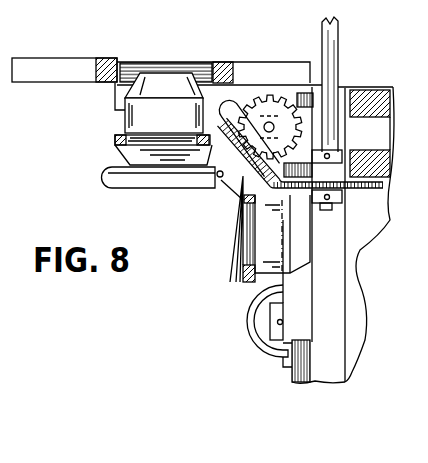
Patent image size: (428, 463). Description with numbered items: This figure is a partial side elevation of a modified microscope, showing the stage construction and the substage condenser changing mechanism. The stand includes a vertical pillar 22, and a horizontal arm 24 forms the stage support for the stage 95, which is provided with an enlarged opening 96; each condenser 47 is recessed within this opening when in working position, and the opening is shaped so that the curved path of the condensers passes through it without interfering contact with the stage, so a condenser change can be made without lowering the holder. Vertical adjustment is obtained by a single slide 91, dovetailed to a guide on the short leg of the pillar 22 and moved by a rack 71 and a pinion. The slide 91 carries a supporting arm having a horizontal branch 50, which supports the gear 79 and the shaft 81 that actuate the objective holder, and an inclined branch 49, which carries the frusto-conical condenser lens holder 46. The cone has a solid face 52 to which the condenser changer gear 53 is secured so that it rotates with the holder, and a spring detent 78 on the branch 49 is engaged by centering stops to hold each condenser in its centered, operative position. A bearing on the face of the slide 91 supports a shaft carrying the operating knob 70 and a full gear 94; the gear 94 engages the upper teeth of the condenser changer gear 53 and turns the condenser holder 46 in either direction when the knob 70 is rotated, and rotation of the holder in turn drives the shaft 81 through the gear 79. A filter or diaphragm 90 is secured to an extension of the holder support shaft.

The vertical pillar 22 is at (327, 368).
The horizontal arm 24 is at (113, 100).
The condenser lens holder 46 is at (120, 140).
The condenser 47 is at (118, 122).
The branch of arm 49 is at (228, 188).
The branch of arm 50 is at (298, 193).
The solid face 52 is at (160, 192).
The condenser changer gear 53 is at (243, 178).
The operating knob 70 is at (389, 107).
The rack 71 is at (288, 368).
The spring detent 78 is at (227, 115).
The gear 79 is at (383, 185).
The shaft 81 is at (328, 50).
The filter or diaphragm 90 is at (122, 190).
The slide 91 is at (300, 372).
The full gear 94 is at (280, 97).
The stage 95 is at (57, 68).
The enlarged opening 96 is at (182, 67).